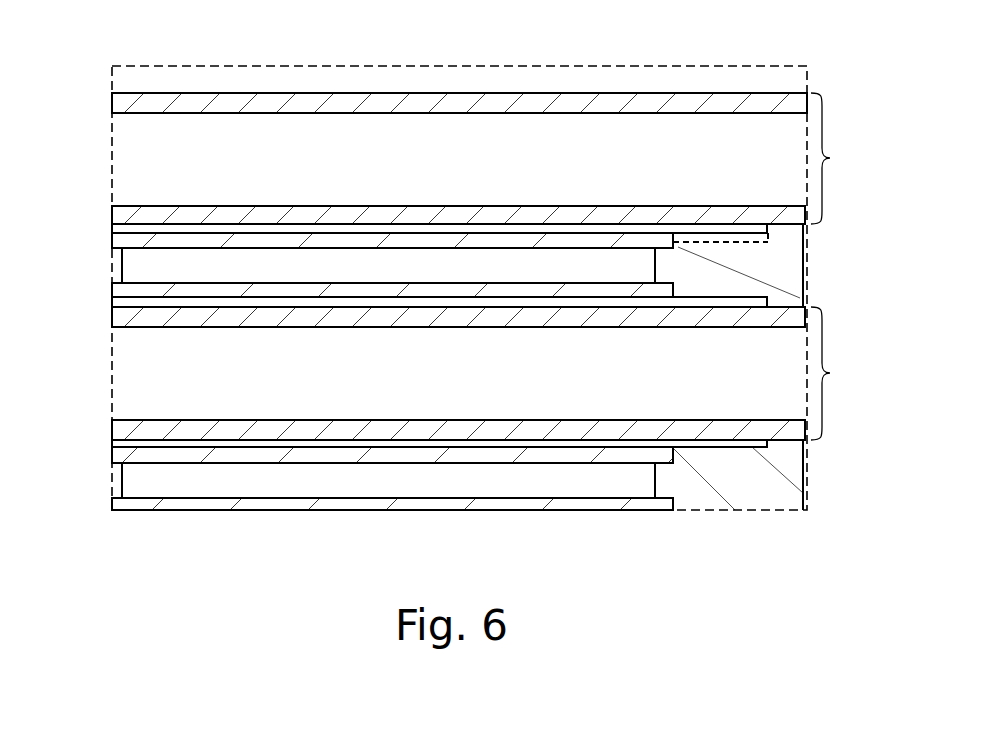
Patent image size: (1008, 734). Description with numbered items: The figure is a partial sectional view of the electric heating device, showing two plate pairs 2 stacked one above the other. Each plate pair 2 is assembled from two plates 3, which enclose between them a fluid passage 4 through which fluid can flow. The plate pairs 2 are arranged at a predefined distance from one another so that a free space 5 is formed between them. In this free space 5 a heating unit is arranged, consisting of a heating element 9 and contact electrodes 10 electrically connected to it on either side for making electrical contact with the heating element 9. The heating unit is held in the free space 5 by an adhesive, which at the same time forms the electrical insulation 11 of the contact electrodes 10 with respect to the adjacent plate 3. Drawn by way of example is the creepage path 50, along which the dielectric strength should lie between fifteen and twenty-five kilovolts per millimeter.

The plate pair 2 is at (830, 266).
The plate 3 is at (552, 103).
The fluid passage 4 is at (337, 130).
The free space 5 is at (110, 280).
The heating element 9 is at (390, 260).
The contact electrode 10 is at (180, 242).
The electrical insulation 11 is at (665, 227).
The creepage path 50 is at (752, 242).